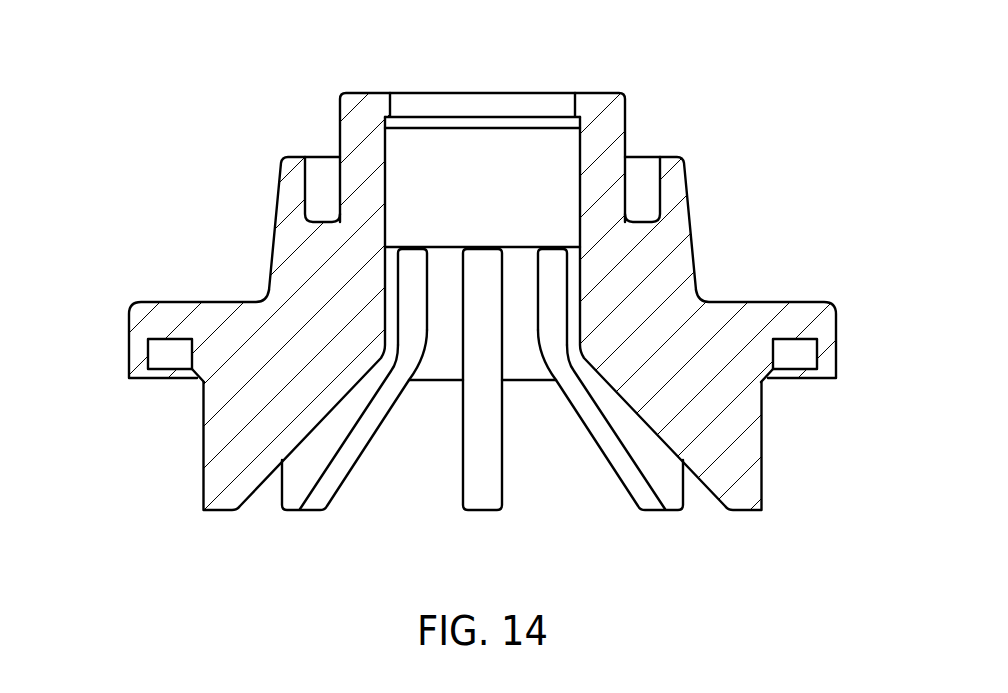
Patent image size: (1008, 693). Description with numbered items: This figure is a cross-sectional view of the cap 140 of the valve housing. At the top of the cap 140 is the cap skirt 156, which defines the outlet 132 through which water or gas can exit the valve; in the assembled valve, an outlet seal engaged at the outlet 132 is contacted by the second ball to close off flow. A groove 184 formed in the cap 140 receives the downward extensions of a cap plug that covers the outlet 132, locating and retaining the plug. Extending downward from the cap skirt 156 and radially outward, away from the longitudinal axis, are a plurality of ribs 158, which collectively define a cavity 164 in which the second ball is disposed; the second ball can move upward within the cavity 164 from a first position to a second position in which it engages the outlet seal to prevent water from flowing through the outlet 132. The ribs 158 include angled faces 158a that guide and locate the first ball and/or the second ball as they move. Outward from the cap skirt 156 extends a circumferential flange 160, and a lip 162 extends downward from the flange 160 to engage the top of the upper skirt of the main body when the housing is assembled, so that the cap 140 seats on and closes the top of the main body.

The cap 140 is at (153, 110).
The outlet 132 is at (513, 153).
The groove 184 is at (320, 190).
The cap skirt 156 is at (628, 128).
The lip 162 is at (128, 348).
The circumferential flange 160 is at (172, 347).
The cavity 164 is at (556, 297).
The ribs 158 is at (465, 478).
The angled faces 158a is at (483, 498).